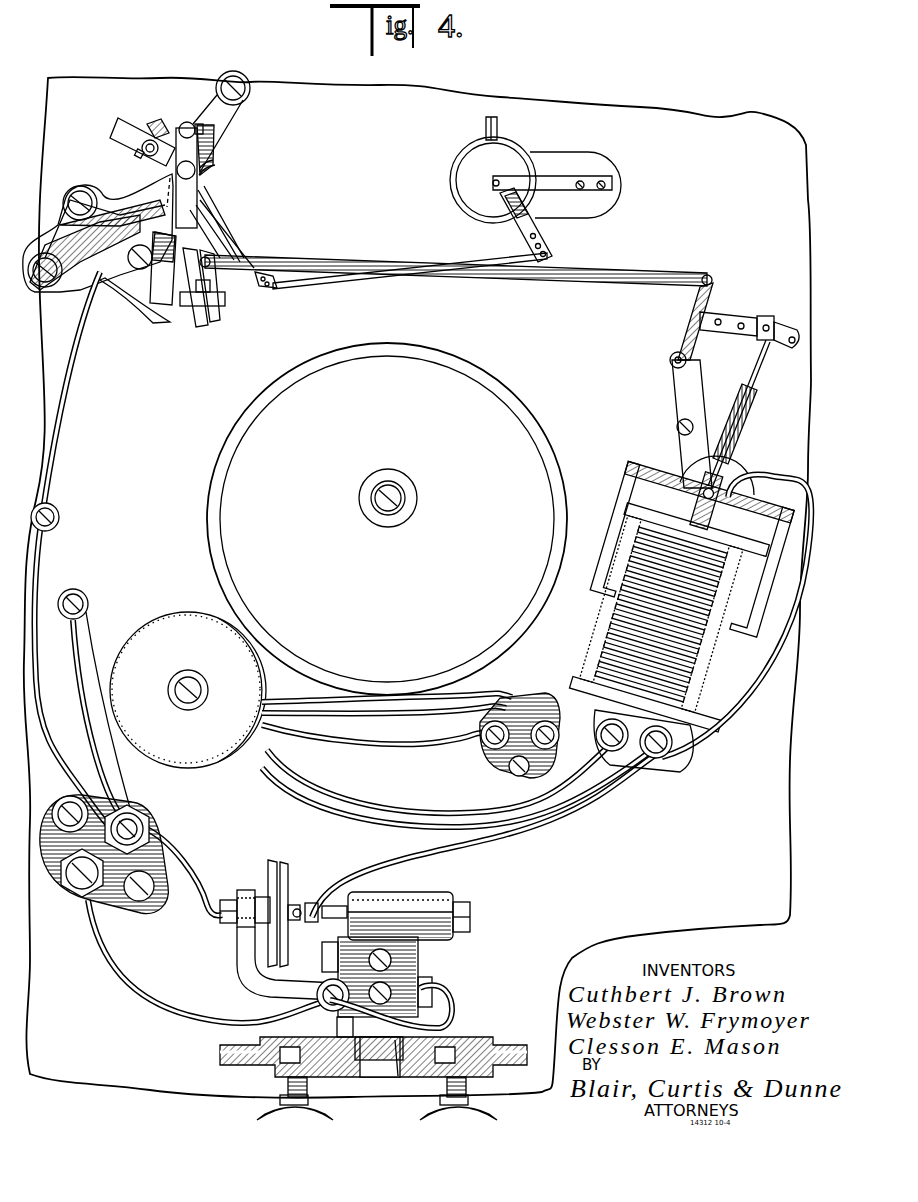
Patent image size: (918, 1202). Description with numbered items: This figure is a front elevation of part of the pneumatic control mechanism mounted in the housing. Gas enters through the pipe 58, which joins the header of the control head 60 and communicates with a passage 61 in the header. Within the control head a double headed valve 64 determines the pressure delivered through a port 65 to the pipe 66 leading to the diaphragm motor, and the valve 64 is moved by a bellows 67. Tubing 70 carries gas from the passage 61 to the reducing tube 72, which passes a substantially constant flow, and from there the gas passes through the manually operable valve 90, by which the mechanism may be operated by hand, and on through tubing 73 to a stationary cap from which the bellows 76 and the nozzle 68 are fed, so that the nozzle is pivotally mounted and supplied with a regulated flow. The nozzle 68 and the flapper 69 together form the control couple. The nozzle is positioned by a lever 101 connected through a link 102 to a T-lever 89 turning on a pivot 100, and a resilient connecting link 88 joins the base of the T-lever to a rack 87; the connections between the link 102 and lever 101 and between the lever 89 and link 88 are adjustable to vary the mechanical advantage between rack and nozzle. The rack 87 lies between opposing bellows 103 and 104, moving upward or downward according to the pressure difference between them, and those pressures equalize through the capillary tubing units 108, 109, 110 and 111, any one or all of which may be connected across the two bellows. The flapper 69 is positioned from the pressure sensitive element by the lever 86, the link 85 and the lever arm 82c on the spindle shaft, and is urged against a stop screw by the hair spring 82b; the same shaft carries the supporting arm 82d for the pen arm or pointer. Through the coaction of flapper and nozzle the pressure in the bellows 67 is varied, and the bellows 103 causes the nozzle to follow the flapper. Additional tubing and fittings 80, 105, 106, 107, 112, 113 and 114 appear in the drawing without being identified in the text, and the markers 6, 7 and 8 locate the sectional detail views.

The section line 8- 8 is at (302, 63).
The supporting arm 82d is at (120, 132).
The hair spring 82b is at (212, 170).
The lever 101 is at (205, 212).
The flapper 69 is at (215, 222).
The nozzle 68 is at (212, 242).
The bellows 76 is at (196, 316).
The lever arm 82c is at (258, 286).
The link 102 is at (552, 284).
The link 85 is at (492, 260).
The lever 86 is at (545, 240).
The pivot 100 is at (670, 360).
The T-lever 89 is at (738, 320).
The resilient connecting link 88 is at (738, 414).
The rack 87 is at (622, 488).
The bellows 104 is at (648, 562).
The bellows 103 is at (628, 632).
The capillary tubing unit 111 is at (756, 668).
The capillary tubing unit 108 is at (178, 632).
The tube 113 is at (312, 700).
The tube 112 is at (305, 756).
The capillary tubing unit 109 is at (378, 808).
The capillary tubing unit 110 is at (341, 806).
The tube 105 is at (437, 852).
The bracket 114 is at (541, 702).
The section line 7- 7 is at (472, 736).
The screw 106 is at (603, 720).
The screw 107 is at (642, 748).
The tubing 73 is at (66, 358).
The tube 80 is at (78, 680).
The reducing tube 72 is at (104, 902).
The manually operable valve 90 is at (127, 808).
The section line 6- 6 is at (165, 822).
The bellows 67 is at (285, 880).
The double headed valve 64 is at (346, 893).
The control head 60 is at (437, 894).
The tubing 70 is at (448, 1004).
The pipe 58 is at (359, 1067).
The port 65 is at (352, 1065).
The passage 61 is at (400, 1066).
The pipe 66 is at (228, 1067).